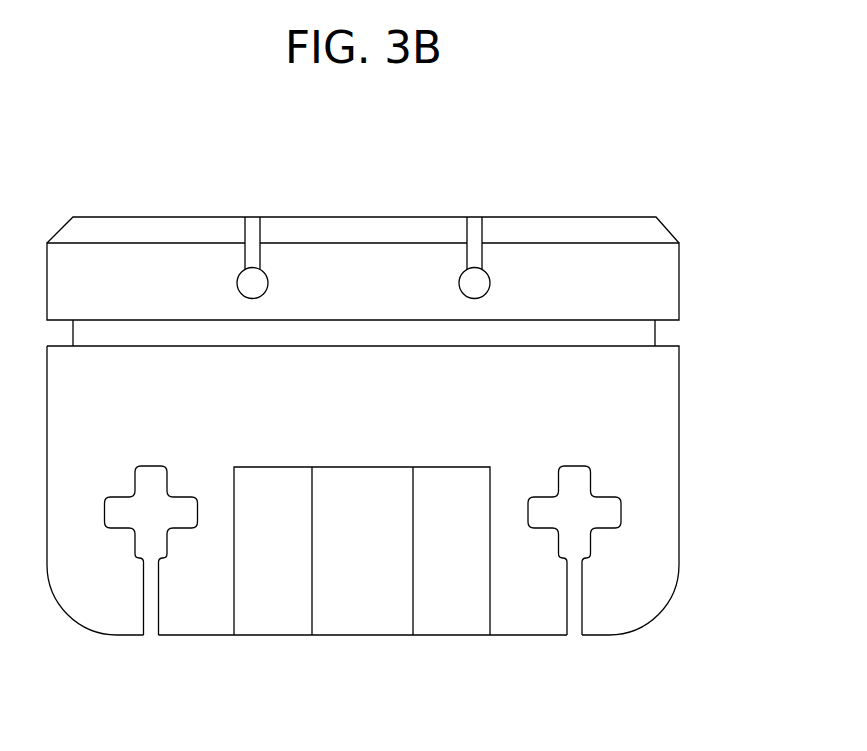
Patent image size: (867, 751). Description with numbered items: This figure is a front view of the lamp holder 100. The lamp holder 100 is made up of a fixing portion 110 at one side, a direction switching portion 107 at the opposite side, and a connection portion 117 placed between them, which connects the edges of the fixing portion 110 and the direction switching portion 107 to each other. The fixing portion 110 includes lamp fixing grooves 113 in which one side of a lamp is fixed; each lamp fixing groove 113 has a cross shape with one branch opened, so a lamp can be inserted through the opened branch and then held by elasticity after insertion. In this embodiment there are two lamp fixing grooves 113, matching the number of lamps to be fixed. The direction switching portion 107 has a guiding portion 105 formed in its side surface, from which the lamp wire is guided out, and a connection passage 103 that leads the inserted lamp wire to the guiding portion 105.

The lamp holder 100 is at (68, 158).
The connection passage 103 is at (478, 252).
The guiding portion 105 is at (478, 275).
The direction switching portion 107 is at (435, 254).
The fixing portion 110 is at (662, 445).
The lamp fixing groove 113 is at (609, 509).
The connection portion 117 is at (647, 335).